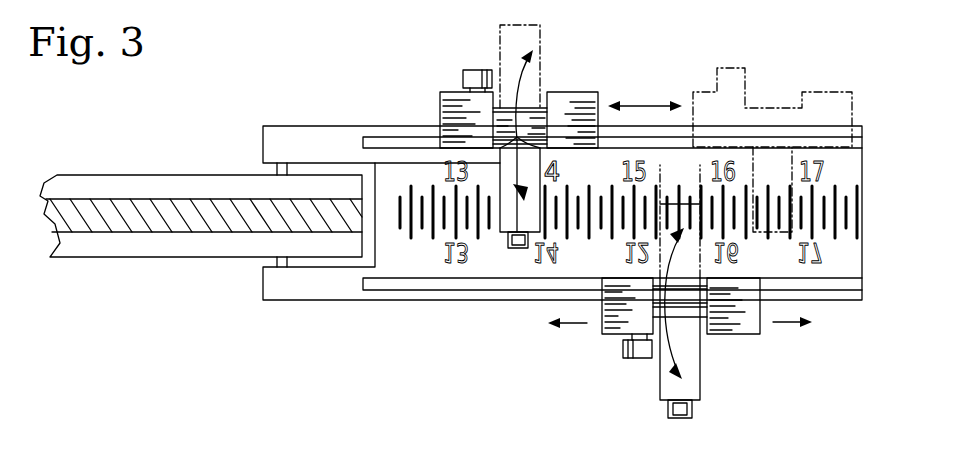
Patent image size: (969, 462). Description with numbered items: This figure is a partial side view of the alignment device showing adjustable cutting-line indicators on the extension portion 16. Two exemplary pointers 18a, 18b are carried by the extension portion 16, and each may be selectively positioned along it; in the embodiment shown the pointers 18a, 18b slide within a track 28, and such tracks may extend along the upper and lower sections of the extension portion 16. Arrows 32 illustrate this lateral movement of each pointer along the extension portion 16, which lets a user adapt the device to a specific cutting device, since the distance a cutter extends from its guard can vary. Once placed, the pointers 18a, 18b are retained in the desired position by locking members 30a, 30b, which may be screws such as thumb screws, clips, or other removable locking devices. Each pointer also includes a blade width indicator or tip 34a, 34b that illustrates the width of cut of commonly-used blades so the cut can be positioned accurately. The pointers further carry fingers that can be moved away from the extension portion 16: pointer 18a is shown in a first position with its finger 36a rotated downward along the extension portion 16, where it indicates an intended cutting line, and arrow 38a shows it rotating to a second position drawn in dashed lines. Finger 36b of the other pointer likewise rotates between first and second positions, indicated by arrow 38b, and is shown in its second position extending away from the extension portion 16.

The extension portion 16 is at (791, 56).
The pointer 18a is at (573, 92).
The pointer 18b is at (740, 334).
The track 28 is at (380, 140).
The locking member 30a is at (475, 70).
The locking member 30b is at (645, 360).
The arrows 32 is at (645, 103).
The blade width indicator 34a is at (517, 250).
The blade width indicator 34b is at (678, 420).
The finger 36a is at (500, 184).
The finger 36b is at (690, 385).
The arrow 38a is at (495, 118).
The arrow 38b is at (687, 296).